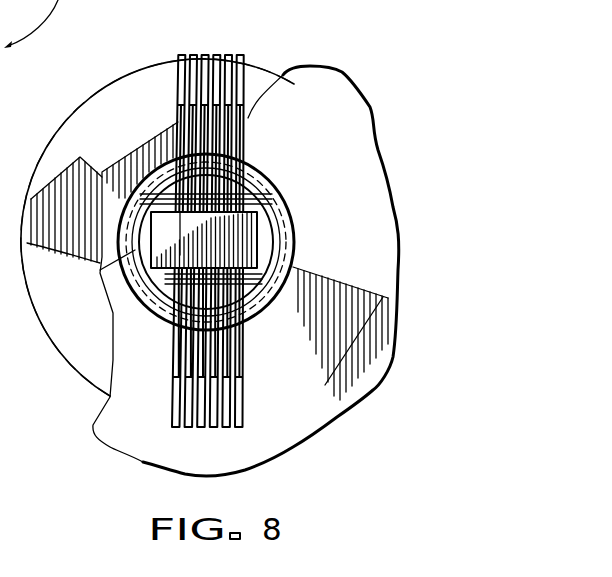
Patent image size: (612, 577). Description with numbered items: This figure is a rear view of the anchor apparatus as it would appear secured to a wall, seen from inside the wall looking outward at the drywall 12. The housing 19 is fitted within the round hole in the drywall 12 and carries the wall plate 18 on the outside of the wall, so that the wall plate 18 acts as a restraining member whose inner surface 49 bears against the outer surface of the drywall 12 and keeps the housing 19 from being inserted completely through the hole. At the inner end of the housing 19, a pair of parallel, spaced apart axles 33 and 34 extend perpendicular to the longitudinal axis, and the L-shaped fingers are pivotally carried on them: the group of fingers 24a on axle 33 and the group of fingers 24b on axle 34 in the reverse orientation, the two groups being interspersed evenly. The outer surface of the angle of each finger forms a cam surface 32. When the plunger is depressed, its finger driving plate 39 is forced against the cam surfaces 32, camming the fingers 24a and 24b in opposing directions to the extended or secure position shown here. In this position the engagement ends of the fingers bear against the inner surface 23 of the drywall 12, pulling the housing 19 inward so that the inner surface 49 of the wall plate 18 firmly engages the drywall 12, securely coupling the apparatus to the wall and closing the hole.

The drywall 12 is at (324, 80).
The wall plate 18 is at (78, 156).
The housing 19 is at (103, 271).
The inner surface 23 is at (331, 118).
The fingers 24a is at (178, 70).
The fingers 24b is at (172, 402).
The cam surface 32 is at (147, 137).
The axle 33 is at (278, 197).
The axle 34 is at (293, 267).
The finger driving plate 39 is at (245, 233).
The inner surface 49 is at (90, 123).